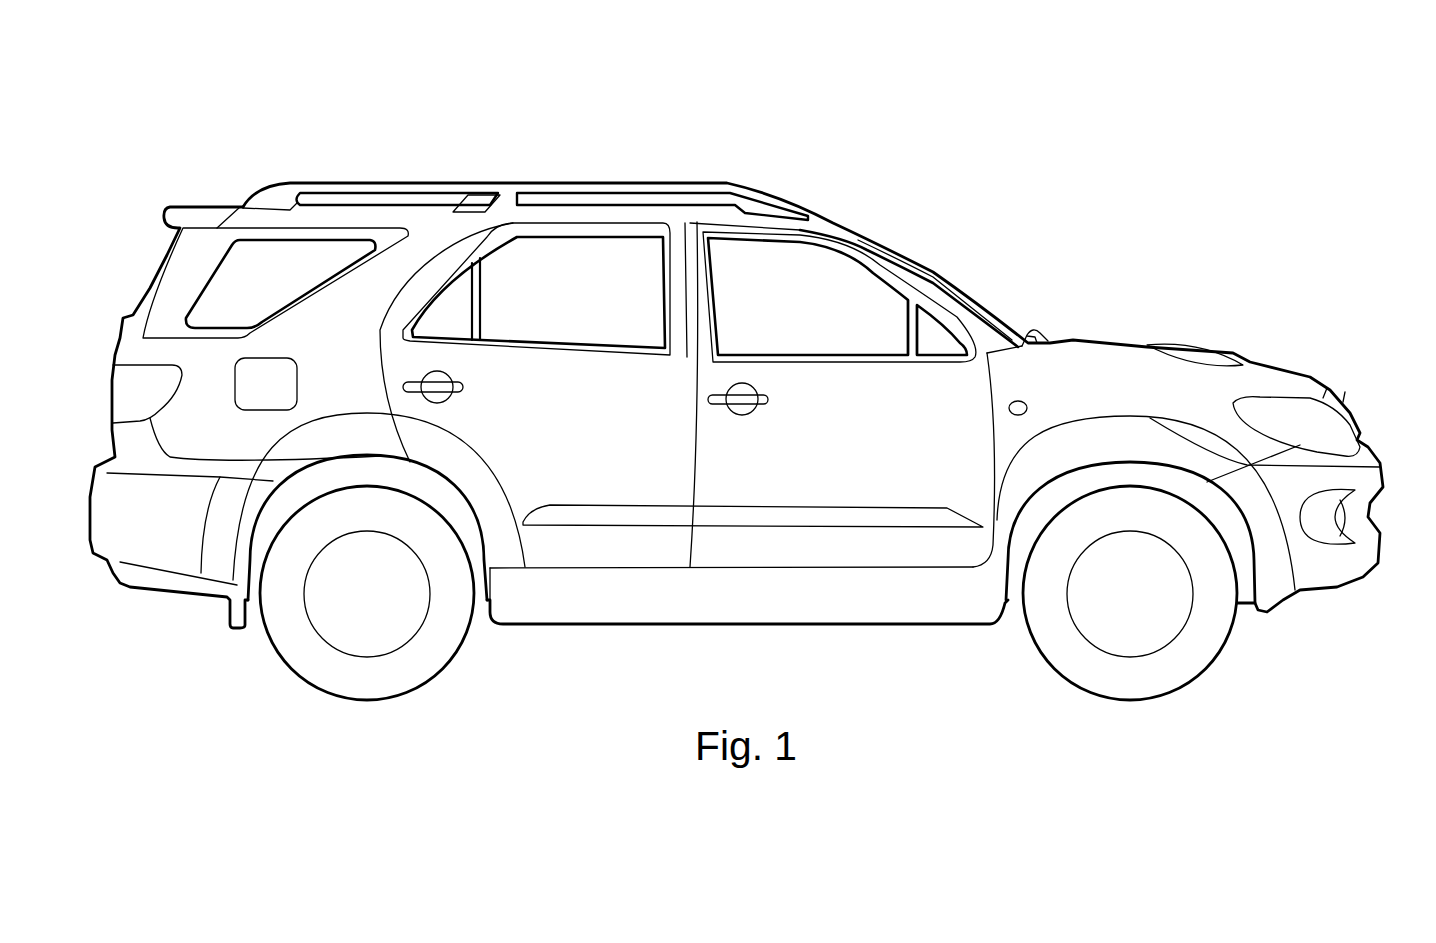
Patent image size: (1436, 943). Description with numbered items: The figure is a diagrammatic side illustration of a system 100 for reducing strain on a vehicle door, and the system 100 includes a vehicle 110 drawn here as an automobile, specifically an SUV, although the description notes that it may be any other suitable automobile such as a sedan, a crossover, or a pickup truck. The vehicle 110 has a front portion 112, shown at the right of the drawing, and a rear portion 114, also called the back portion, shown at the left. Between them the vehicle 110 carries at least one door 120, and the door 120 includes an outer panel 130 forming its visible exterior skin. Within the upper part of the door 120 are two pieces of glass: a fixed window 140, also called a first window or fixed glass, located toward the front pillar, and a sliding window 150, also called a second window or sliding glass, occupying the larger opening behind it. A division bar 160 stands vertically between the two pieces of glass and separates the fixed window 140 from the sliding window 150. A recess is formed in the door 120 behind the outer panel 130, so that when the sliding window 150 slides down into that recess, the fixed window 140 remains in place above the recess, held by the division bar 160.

The system 100 is at (436, 131).
The vehicle 110 is at (678, 178).
The front portion 112 is at (1402, 356).
The rear portion 114 is at (104, 199).
The door 120 is at (858, 573).
The outer panel 130 is at (867, 468).
The fixed window 140 is at (942, 333).
The sliding window 150 is at (827, 262).
The division bar 160 is at (907, 328).